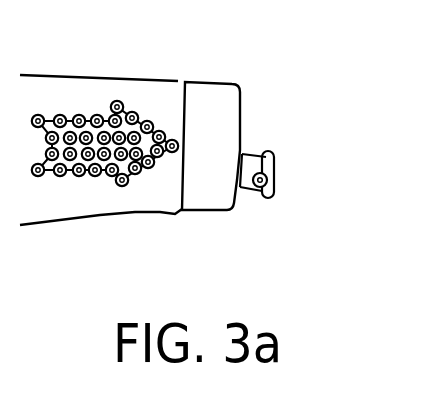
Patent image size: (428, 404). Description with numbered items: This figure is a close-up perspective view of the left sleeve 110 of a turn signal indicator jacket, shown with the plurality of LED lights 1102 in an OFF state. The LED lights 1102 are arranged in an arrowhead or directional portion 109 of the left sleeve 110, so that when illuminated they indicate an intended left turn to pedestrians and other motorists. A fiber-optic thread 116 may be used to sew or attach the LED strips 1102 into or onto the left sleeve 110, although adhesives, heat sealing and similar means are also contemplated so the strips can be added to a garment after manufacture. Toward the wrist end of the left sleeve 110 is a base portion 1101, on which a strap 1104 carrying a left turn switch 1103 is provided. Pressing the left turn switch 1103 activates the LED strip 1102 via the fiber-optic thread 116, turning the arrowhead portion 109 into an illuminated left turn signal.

The arrowhead or directional portion 109 is at (92, 121).
The left sleeve 110 is at (140, 87).
The base portion 1101 is at (210, 98).
The strap 1104 is at (243, 162).
The left turn switch 1103 is at (262, 180).
The LED lights 1102 is at (138, 166).
The fiber-optic thread 116 is at (38, 178).